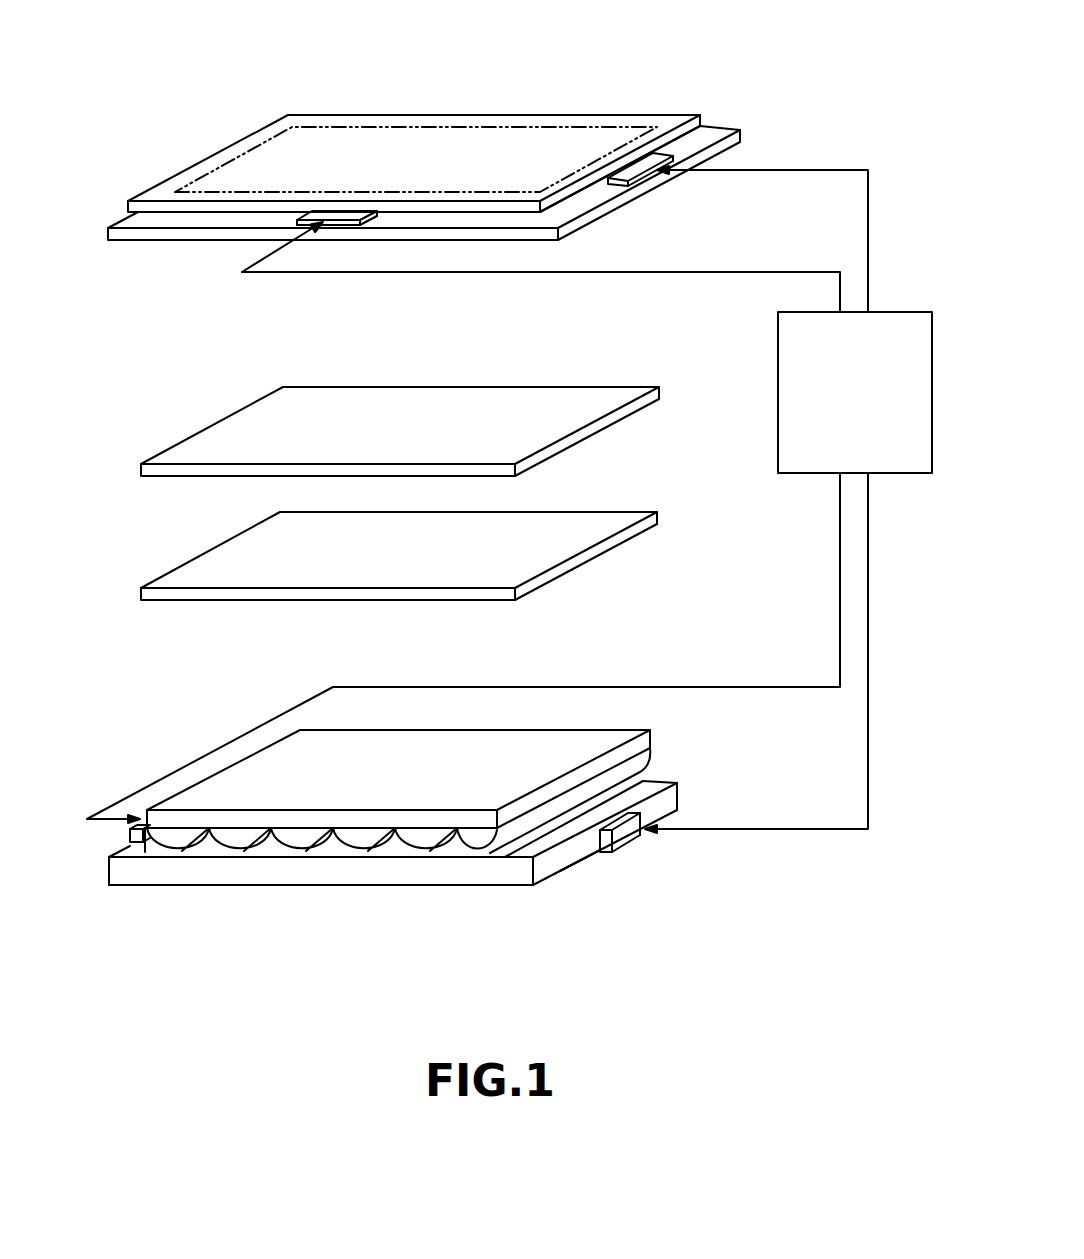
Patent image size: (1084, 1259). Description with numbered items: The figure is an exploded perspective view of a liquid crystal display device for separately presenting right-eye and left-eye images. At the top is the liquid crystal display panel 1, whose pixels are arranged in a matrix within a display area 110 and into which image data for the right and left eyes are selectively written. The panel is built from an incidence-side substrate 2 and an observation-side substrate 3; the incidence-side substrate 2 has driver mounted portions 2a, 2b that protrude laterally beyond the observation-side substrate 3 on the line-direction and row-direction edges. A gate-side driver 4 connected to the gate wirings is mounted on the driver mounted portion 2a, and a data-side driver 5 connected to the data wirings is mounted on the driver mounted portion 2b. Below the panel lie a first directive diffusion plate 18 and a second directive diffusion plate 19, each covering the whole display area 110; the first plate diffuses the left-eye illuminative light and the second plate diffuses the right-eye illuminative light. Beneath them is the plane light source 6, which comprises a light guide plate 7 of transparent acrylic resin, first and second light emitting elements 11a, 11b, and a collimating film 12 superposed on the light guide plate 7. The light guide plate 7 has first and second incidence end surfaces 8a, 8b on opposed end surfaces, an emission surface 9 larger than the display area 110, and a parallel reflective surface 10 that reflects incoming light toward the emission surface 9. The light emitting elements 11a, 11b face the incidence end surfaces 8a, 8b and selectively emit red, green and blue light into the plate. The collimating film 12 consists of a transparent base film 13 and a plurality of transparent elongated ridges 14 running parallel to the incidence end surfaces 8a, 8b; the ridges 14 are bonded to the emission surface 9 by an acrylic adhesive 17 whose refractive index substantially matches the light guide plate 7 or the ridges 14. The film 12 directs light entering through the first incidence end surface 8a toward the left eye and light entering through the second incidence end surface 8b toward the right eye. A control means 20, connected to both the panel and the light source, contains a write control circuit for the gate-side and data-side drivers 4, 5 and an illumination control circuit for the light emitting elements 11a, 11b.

The liquid crystal display panel 1 is at (465, 88).
The incidence-side substrate 2 is at (145, 240).
The driver mounted portion 2a is at (708, 137).
The driver mounted portion 2b is at (233, 218).
The observation-side substrate 3 is at (375, 112).
The gate-side driver 4 is at (640, 167).
The data-side driver 5 is at (338, 215).
The display area 110 is at (297, 158).
The control means 20 is at (905, 312).
The first directive diffusion plate 18 is at (328, 398).
The second directive diffusion plate 19 is at (217, 565).
The collimating film 12 is at (668, 735).
The transparent base film 13 is at (282, 775).
The elongated ridges 14 is at (410, 842).
The acrylic adhesive 17 is at (530, 835).
The plane light source 6 is at (247, 908).
The light guide plate 7 is at (187, 868).
The first incidence end surface 8a is at (108, 870).
The second incidence end surface 8b is at (568, 852).
The emission surface 9 is at (657, 785).
The reflective surface 10 is at (450, 887).
The first light emitting element 11a is at (137, 840).
The second light emitting element 11b is at (625, 833).